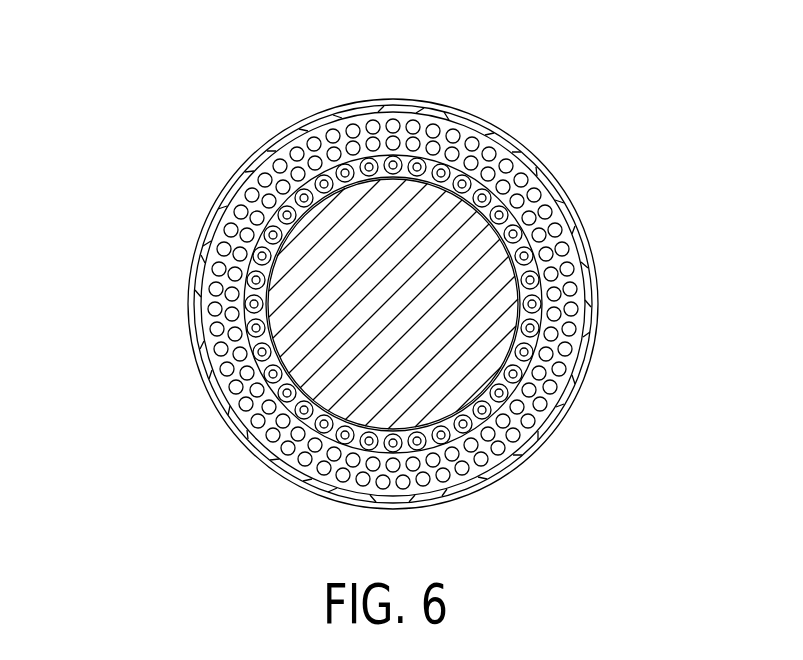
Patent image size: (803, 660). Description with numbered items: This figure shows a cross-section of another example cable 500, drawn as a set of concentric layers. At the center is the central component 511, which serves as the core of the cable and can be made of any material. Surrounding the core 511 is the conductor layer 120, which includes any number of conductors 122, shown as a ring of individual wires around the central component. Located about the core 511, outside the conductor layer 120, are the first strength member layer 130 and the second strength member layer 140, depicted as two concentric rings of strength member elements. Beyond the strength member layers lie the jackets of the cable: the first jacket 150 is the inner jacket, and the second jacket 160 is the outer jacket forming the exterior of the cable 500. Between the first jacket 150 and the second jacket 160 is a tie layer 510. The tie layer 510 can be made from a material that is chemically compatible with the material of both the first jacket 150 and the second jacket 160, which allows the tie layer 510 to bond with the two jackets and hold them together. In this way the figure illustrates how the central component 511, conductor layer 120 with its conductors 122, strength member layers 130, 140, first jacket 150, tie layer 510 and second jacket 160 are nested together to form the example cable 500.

The cable 500 is at (373, 289).
The tie layer 510 is at (575, 230).
The central component 511 is at (333, 217).
The conductor layer 120 is at (284, 308).
The conductors 122 is at (277, 373).
The first strength member layer 130 is at (350, 460).
The second strength member layer 140 is at (532, 422).
The first jacket 150 is at (587, 353).
The second jacket 160 is at (465, 112).